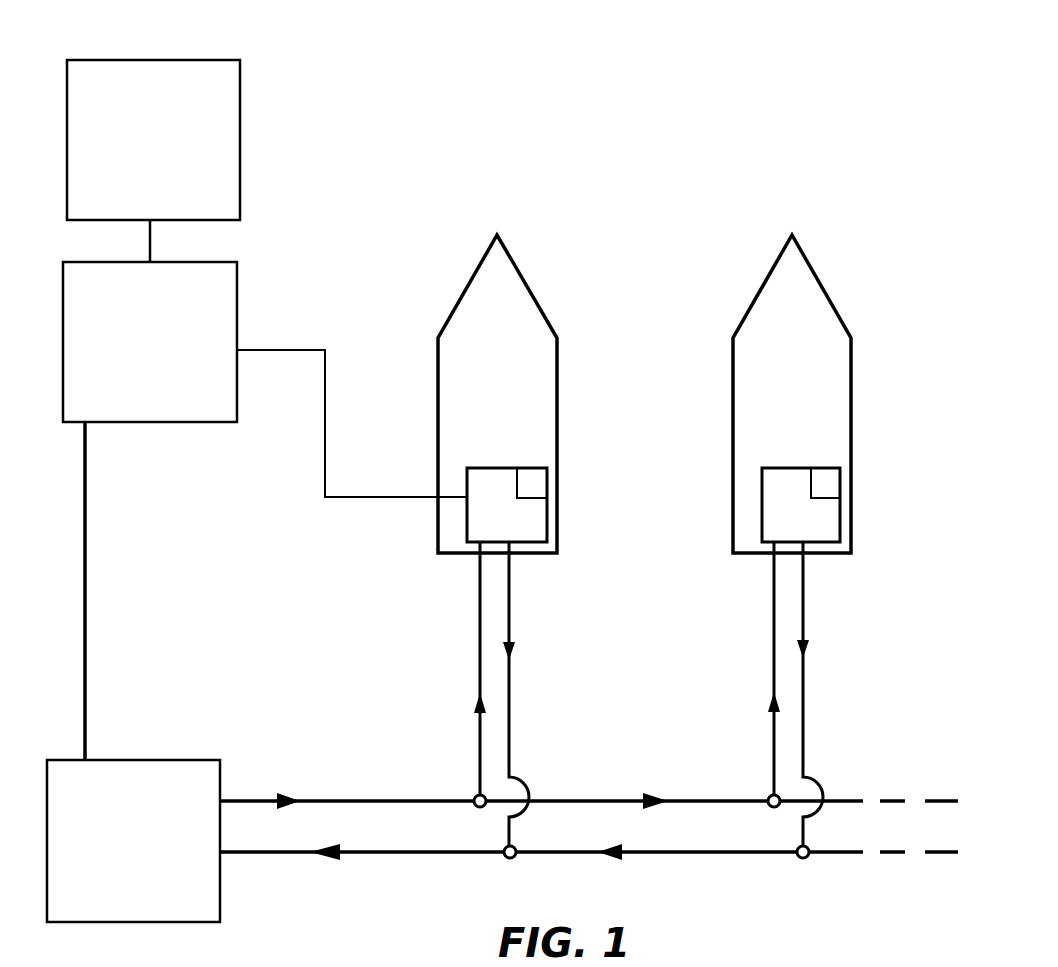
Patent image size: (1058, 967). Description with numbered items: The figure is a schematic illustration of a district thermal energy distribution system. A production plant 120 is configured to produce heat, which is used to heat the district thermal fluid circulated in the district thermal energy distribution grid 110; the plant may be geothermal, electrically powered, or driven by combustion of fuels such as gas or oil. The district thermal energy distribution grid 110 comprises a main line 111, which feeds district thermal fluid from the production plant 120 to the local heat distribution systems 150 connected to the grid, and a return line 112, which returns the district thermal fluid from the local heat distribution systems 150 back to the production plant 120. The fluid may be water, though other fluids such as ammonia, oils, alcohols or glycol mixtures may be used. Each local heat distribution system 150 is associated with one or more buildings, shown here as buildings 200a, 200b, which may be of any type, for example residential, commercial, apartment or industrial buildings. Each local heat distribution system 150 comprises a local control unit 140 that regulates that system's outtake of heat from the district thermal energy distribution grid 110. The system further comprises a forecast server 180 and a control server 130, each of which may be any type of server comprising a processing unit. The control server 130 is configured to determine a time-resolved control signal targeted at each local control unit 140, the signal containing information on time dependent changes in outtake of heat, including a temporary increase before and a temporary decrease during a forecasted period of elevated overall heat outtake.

The district thermal energy distribution grid 110 is at (567, 750).
The main line 111 is at (250, 798).
The return line 112 is at (370, 857).
The production plant 120 is at (115, 775).
The control server 130 is at (220, 275).
The local control unit 140 is at (532, 488).
The local heat distribution system 150 is at (506, 503).
The forecast server 180 is at (212, 66).
The building 200a is at (532, 286).
The building 200b is at (826, 286).